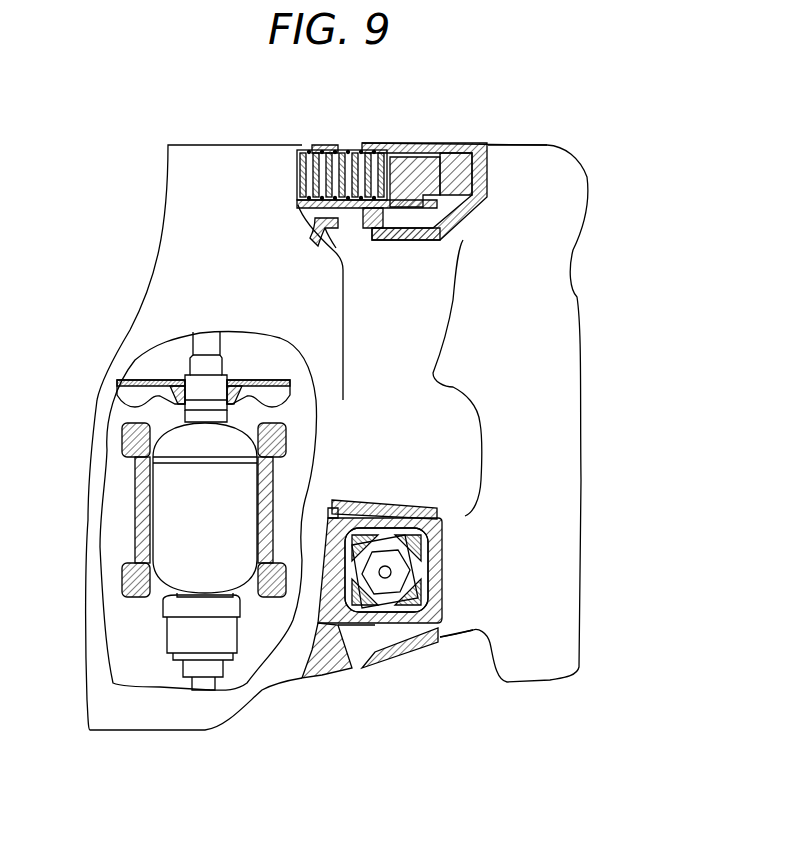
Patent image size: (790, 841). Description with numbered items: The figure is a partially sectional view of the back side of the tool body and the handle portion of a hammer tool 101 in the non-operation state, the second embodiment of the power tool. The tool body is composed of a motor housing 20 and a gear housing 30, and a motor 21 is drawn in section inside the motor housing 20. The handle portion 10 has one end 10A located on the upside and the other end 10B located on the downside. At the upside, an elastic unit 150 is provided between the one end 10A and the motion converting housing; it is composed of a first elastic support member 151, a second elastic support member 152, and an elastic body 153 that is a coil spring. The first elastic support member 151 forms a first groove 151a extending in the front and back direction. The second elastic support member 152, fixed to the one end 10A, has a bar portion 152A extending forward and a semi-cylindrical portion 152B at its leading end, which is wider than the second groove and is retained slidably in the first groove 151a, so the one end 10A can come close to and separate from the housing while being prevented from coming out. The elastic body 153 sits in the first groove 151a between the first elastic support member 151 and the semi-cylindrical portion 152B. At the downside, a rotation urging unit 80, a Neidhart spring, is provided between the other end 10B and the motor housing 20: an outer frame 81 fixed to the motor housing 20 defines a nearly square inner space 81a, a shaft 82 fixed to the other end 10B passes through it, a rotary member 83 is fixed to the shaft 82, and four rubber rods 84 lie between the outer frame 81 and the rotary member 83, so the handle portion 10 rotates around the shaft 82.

The handle portion 10 is at (543, 393).
The one end 10A is at (480, 143).
The other end 10B is at (437, 642).
The motor housing 20 is at (122, 700).
The motor 21 is at (195, 508).
The gear housing 30 is at (240, 168).
The rotation urging unit 80 is at (408, 636).
The outer frame 81 is at (313, 680).
The inner space 81a is at (378, 622).
The shaft 82 is at (386, 556).
The rotary member 83 is at (363, 573).
The rubber rods 84 is at (447, 513).
The hammer tool 101 is at (600, 145).
The elastic unit 150 is at (420, 243).
The first elastic support member 151 is at (305, 168).
The first groove 151a is at (342, 182).
The second elastic support member 152 is at (487, 167).
The bar portion 152A is at (447, 143).
The semi-cylindrical portion 152B is at (397, 143).
The elastic body 153 is at (343, 157).